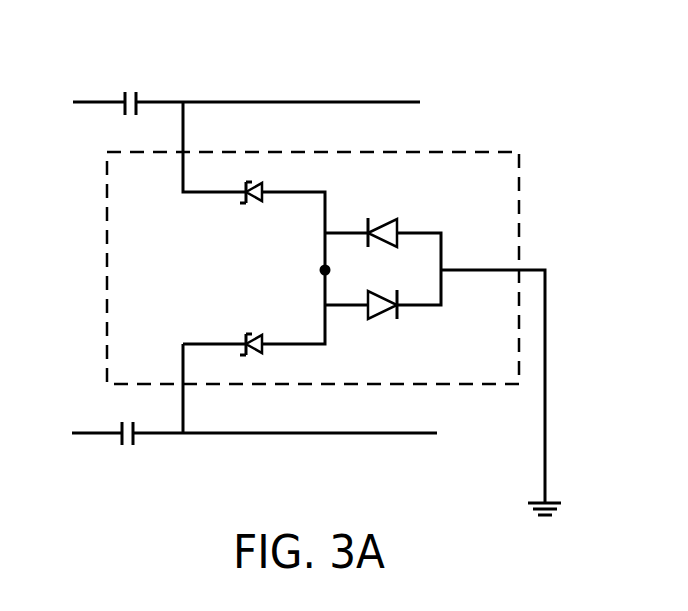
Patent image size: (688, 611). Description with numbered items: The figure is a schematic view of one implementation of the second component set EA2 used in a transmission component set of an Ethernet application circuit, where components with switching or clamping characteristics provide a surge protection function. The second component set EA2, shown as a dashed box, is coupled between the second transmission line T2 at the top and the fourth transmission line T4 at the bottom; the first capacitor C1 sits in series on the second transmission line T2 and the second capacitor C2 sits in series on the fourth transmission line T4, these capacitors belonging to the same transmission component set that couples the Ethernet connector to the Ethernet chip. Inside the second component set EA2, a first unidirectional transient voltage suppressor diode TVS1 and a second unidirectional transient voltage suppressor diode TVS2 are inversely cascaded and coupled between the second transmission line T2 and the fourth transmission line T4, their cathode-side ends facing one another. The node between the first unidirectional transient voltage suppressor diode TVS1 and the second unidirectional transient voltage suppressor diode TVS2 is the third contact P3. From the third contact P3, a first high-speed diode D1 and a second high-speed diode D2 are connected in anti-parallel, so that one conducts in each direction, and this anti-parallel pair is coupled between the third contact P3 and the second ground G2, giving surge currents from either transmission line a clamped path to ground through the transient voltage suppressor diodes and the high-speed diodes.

The second transmission line T2 is at (310, 102).
The fourth transmission line T4 is at (302, 433).
The first capacitor C1 is at (110, 91).
The second capacitor C2 is at (107, 421).
The second component set EA2 is at (105, 273).
The first unidirectional transient voltage suppressor diode TVS1 is at (249, 212).
The second unidirectional transient voltage suppressor diode TVS2 is at (249, 329).
The first high-speed diode D1 is at (386, 220).
The second high-speed diode D2 is at (386, 321).
The third contact P3 is at (309, 270).
The second ground G2 is at (563, 504).